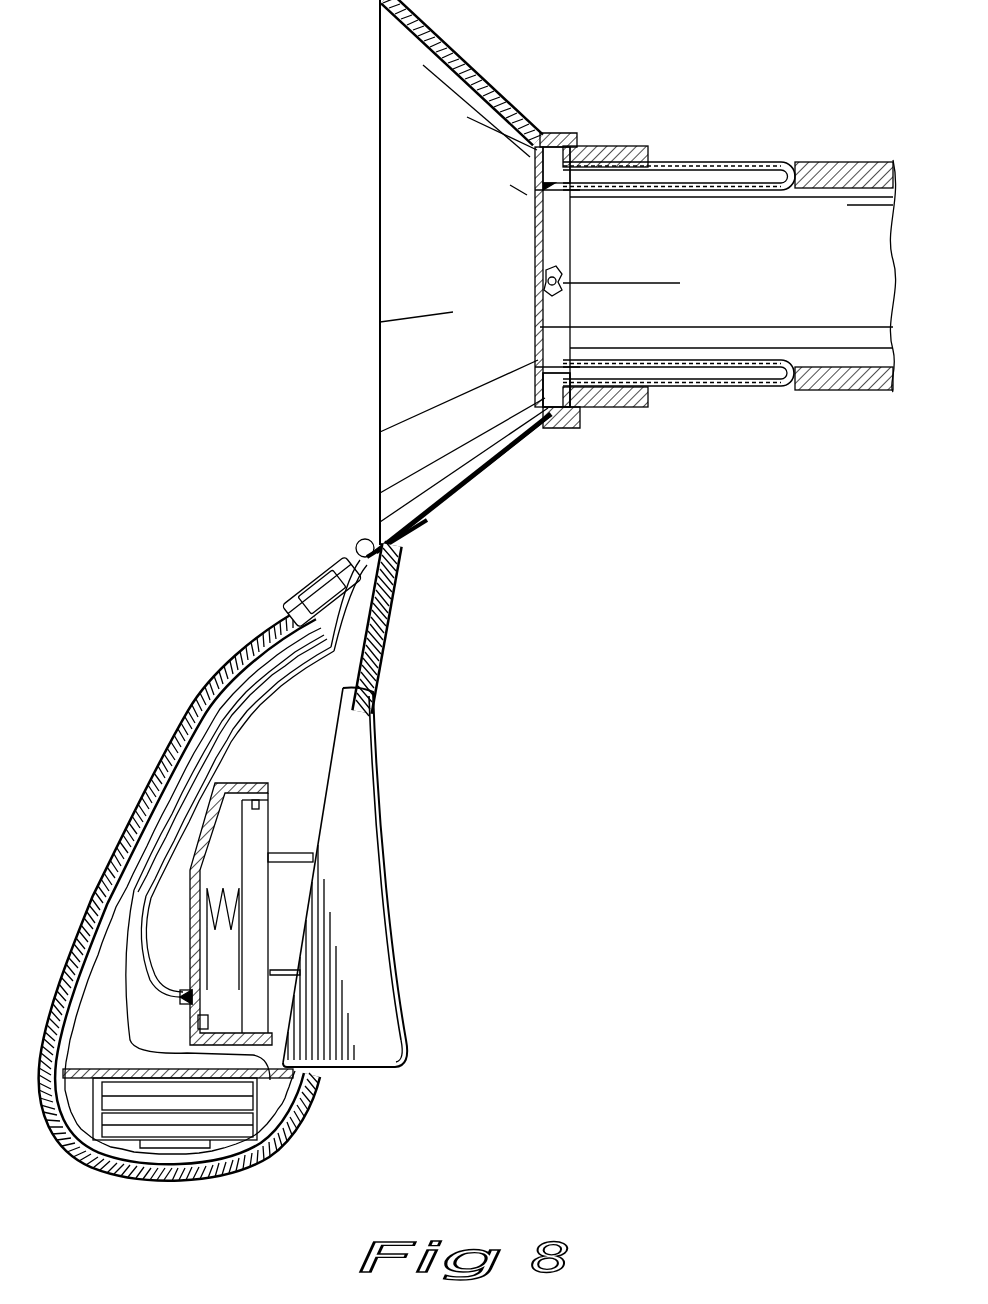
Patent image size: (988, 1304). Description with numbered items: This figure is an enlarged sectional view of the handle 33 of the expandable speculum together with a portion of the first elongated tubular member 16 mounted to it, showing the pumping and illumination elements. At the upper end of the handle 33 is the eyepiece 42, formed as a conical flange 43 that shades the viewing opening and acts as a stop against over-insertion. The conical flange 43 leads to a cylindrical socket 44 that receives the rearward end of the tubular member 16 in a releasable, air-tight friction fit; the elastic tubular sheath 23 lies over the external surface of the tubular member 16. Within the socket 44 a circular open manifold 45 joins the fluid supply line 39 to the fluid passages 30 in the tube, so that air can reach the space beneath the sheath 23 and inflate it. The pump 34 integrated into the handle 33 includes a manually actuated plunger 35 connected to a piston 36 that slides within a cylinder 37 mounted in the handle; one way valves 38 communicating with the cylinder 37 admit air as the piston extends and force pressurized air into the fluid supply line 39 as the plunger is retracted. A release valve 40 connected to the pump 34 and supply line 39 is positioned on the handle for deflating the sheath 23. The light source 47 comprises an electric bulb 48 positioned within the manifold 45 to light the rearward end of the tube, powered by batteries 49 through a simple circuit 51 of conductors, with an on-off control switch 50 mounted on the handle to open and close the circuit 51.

The first elongated tubular member 16 is at (777, 396).
The elastic tubular sheath 23 is at (815, 390).
The fluid passage 30 is at (730, 178).
The handle 33 is at (425, 621).
The pump 34 is at (256, 778).
The plunger 35 is at (365, 935).
The piston 36 is at (258, 843).
The cylinder 37 is at (268, 792).
The one way valves 38 is at (198, 1027).
The fluid supply line 39 is at (163, 893).
The release valve 40 is at (357, 540).
The eyepiece 42 is at (441, 45).
The conical flange 43 is at (398, 163).
The cylindrical socket 44 is at (560, 147).
The circular open manifold 45 is at (548, 388).
The light source 47 is at (577, 275).
The electric bulb 48 is at (545, 275).
The batteries 49 is at (220, 1093).
The on-off control switch 50 is at (303, 575).
The circuit 51 is at (230, 668).